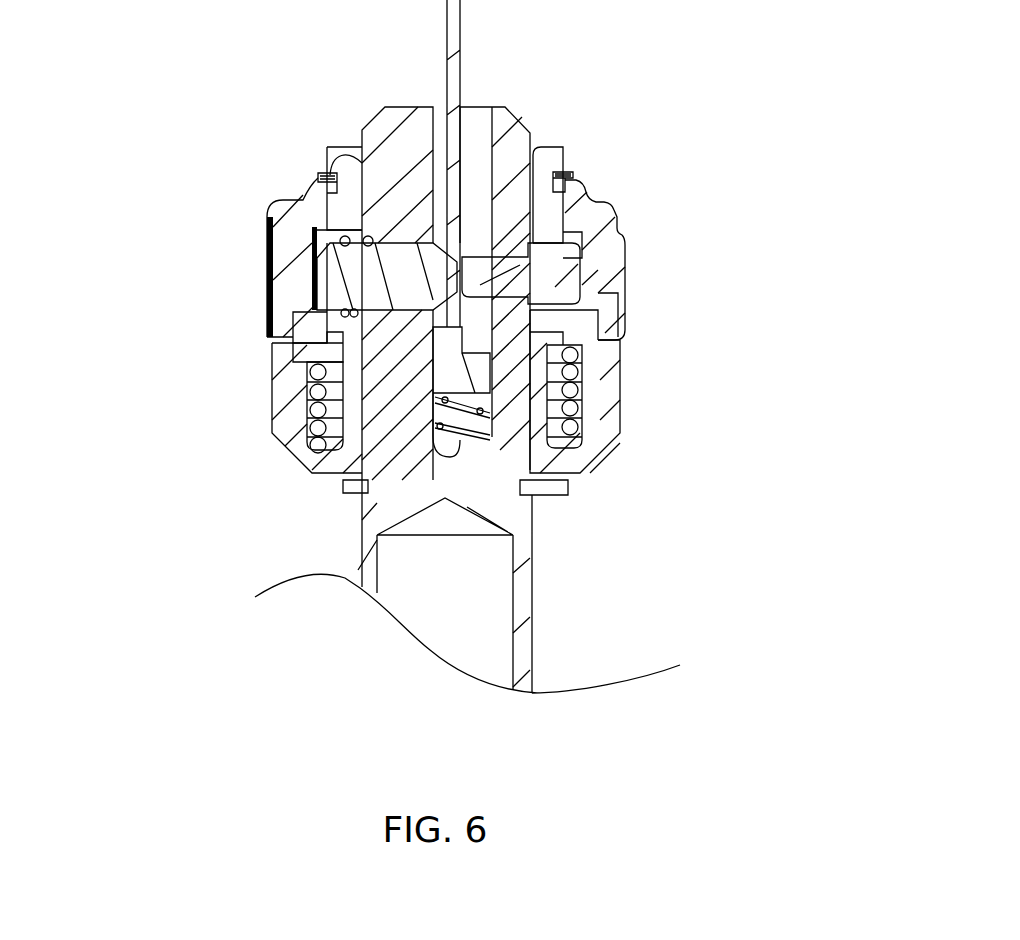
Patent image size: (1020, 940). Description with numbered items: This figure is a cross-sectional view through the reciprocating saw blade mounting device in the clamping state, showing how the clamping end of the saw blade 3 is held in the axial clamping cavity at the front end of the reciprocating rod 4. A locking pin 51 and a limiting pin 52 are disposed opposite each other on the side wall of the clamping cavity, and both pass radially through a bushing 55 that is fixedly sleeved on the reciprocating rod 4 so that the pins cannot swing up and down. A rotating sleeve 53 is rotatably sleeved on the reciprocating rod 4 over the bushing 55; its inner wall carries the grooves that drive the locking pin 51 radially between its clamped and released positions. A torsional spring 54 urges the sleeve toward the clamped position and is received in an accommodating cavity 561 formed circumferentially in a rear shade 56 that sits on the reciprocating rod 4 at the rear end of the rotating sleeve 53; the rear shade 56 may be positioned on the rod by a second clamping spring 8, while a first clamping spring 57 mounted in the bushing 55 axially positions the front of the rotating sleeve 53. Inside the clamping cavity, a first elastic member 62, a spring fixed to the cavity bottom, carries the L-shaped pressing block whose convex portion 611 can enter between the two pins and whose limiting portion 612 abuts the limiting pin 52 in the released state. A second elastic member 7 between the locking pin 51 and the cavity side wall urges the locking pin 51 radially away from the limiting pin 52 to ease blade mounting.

The saw blade 3 is at (460, 72).
The reciprocating rod 4 is at (443, 193).
The second elastic member 7 is at (337, 238).
The second clamping spring 8 is at (562, 487).
The locking pin 51 is at (367, 287).
The limiting pin 52 is at (565, 272).
The rotating sleeve 53 is at (613, 305).
The torsional spring 54 is at (580, 390).
The bushing 55 is at (545, 318).
The rear shade 56 is at (597, 432).
The first clamping spring 57 is at (573, 172).
The accommodating cavity 561 is at (288, 450).
The convex portion 611 is at (317, 372).
The limiting portion 612 is at (327, 423).
The first elastic member 62 is at (513, 470).